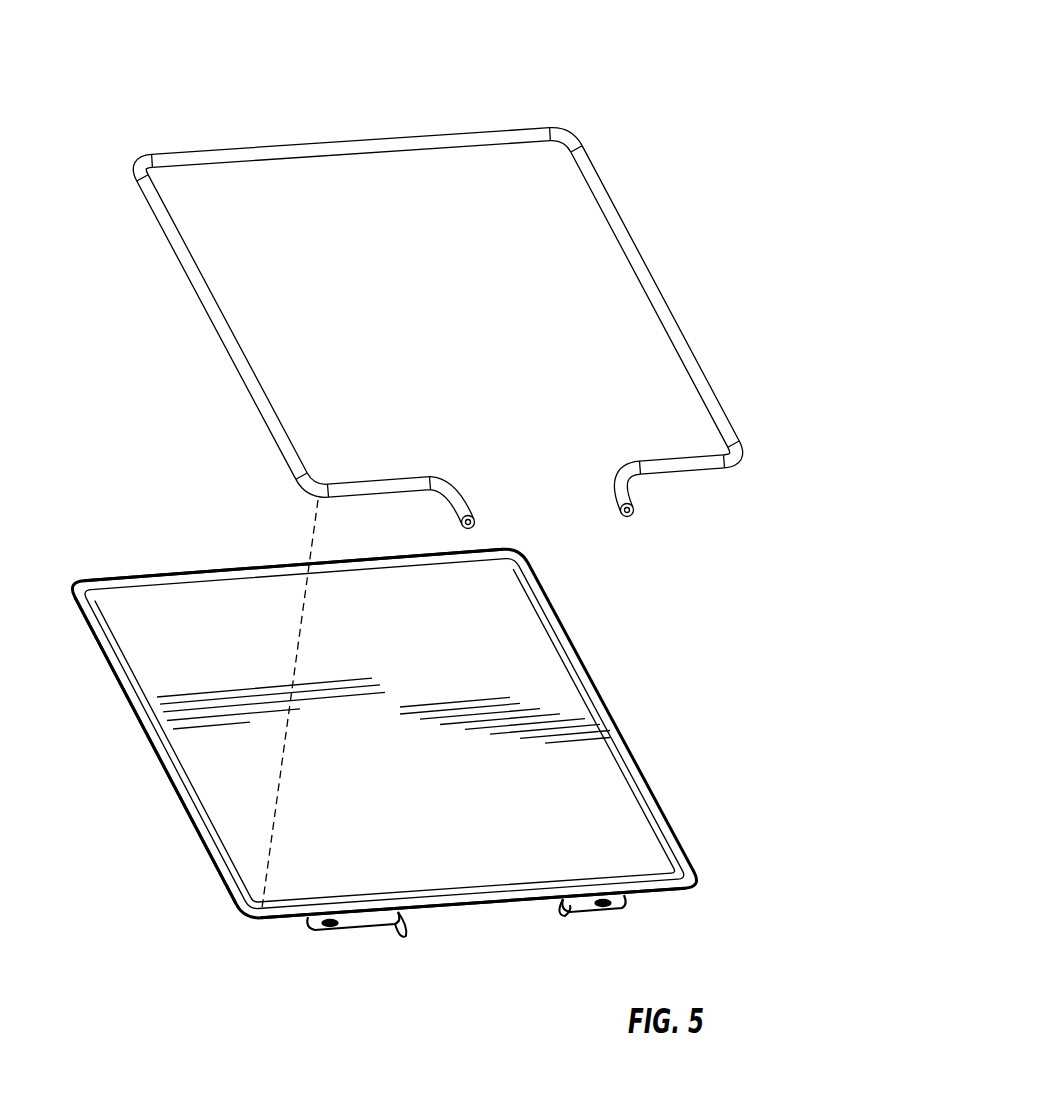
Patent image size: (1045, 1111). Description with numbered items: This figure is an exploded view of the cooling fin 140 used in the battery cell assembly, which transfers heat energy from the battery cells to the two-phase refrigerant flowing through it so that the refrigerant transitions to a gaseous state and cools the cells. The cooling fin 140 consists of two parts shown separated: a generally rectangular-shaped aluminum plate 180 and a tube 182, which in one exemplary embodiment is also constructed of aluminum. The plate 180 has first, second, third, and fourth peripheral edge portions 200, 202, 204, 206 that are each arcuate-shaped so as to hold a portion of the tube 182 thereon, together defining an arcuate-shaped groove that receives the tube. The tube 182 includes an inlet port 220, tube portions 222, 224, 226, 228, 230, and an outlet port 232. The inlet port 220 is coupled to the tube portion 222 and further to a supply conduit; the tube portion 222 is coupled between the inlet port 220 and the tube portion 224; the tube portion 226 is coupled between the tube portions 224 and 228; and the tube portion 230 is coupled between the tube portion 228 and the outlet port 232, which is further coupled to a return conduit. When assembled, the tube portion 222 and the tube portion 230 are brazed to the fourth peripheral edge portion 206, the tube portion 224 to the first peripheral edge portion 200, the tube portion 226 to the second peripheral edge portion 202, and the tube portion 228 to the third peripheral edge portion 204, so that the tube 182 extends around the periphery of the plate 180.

The cooling fin 140 is at (650, 62).
The generally rectangular-shaped aluminum plate 180 is at (532, 695).
The tube 182 is at (683, 337).
The first peripheral edge portion 200 is at (619, 735).
The second peripheral edge portion 202 is at (200, 571).
The third peripheral edge portion 204 is at (152, 742).
The fourth peripheral edge portion 206 is at (452, 906).
The inlet port 220 is at (633, 498).
The tube portion 222 is at (687, 472).
The tube portion 224 is at (612, 205).
The tube portion 226 is at (210, 151).
The tube portion 228 is at (197, 294).
The tube portion 230 is at (396, 490).
The outlet port 232 is at (462, 503).